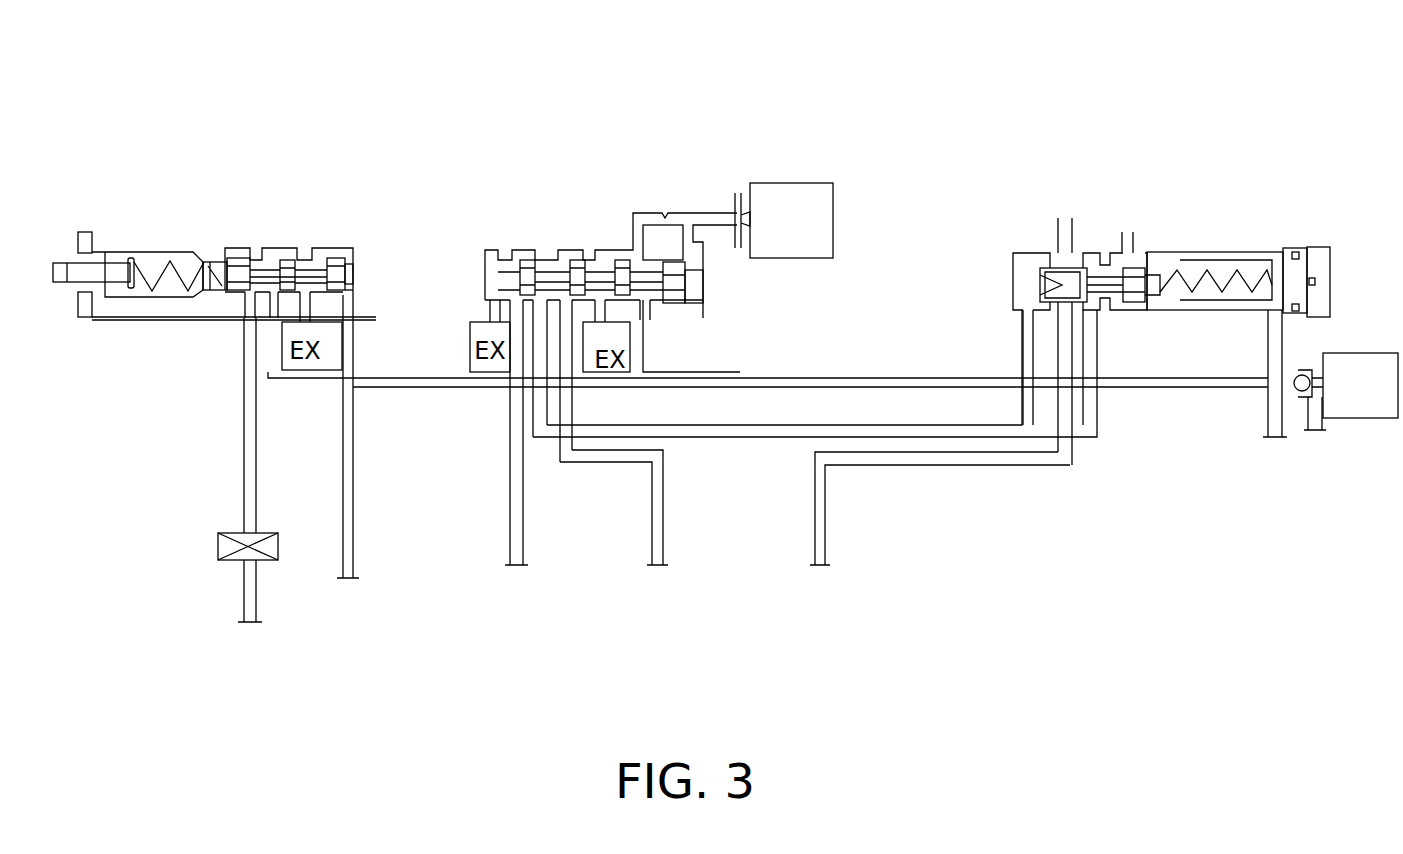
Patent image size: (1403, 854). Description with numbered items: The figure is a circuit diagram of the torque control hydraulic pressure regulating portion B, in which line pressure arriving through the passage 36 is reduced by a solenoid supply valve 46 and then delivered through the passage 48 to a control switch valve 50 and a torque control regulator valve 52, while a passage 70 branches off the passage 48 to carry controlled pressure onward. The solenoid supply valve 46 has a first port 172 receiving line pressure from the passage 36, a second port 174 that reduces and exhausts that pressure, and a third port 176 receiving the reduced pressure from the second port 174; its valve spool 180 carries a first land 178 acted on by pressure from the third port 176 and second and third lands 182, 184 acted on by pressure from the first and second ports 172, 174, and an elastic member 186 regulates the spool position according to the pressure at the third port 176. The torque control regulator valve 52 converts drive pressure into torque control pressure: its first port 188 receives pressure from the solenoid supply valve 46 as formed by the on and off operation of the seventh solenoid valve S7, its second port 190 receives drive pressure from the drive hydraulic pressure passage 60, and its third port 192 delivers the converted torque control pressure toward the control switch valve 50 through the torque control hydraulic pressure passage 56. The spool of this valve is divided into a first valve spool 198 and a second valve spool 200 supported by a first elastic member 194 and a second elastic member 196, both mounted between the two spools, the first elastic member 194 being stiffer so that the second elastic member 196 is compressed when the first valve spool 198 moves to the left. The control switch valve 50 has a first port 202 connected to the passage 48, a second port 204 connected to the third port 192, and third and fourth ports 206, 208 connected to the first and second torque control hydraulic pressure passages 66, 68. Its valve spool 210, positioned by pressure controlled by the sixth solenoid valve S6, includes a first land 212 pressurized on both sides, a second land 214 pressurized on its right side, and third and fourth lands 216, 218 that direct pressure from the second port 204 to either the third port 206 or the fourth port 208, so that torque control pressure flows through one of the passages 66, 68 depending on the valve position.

The solenoid supply valve 46 is at (213, 152).
The torque control hydraulic pressure regulating portion B is at (403, 118).
The control switch valve 50 is at (578, 145).
The torque control regulator valve 52 is at (1177, 188).
The passage 36 is at (243, 590).
The passage 48 is at (848, 378).
The torque control hydraulic pressure passage 56 is at (738, 437).
The drive hydraulic pressure passage 60 is at (950, 465).
The first torque control hydraulic pressure passage 66 is at (525, 505).
The second torque control hydraulic pressure passage 68 is at (665, 520).
The passage 70 is at (355, 505).
The first port 172 is at (250, 300).
The second port 174 is at (273, 300).
The third port 176 is at (352, 292).
The first land 178 is at (337, 258).
The valve spool 180 is at (353, 274).
The second land 182 is at (238, 258).
The third land 184 is at (288, 260).
The elastic member 186 is at (168, 262).
The first port 188 is at (1275, 318).
The second port 190 is at (1063, 305).
The third port 192 is at (1085, 320).
The first elastic member 194 is at (1210, 258).
The second elastic member 196 is at (1015, 280).
The first valve spool 198 is at (1290, 250).
The second valve spool 200 is at (1053, 265).
The first port 202 is at (645, 315).
The second port 204 is at (540, 310).
The third port 206 is at (510, 300).
The fourth port 208 is at (563, 385).
The valve spool 210 is at (706, 286).
The first land 212 is at (670, 270).
The second land 214 is at (622, 268).
The third land 216 is at (525, 262).
The fourth land 218 is at (578, 262).
The sixth solenoid valve S6 is at (791, 220).
The seventh solenoid valve S7 is at (1360, 385).